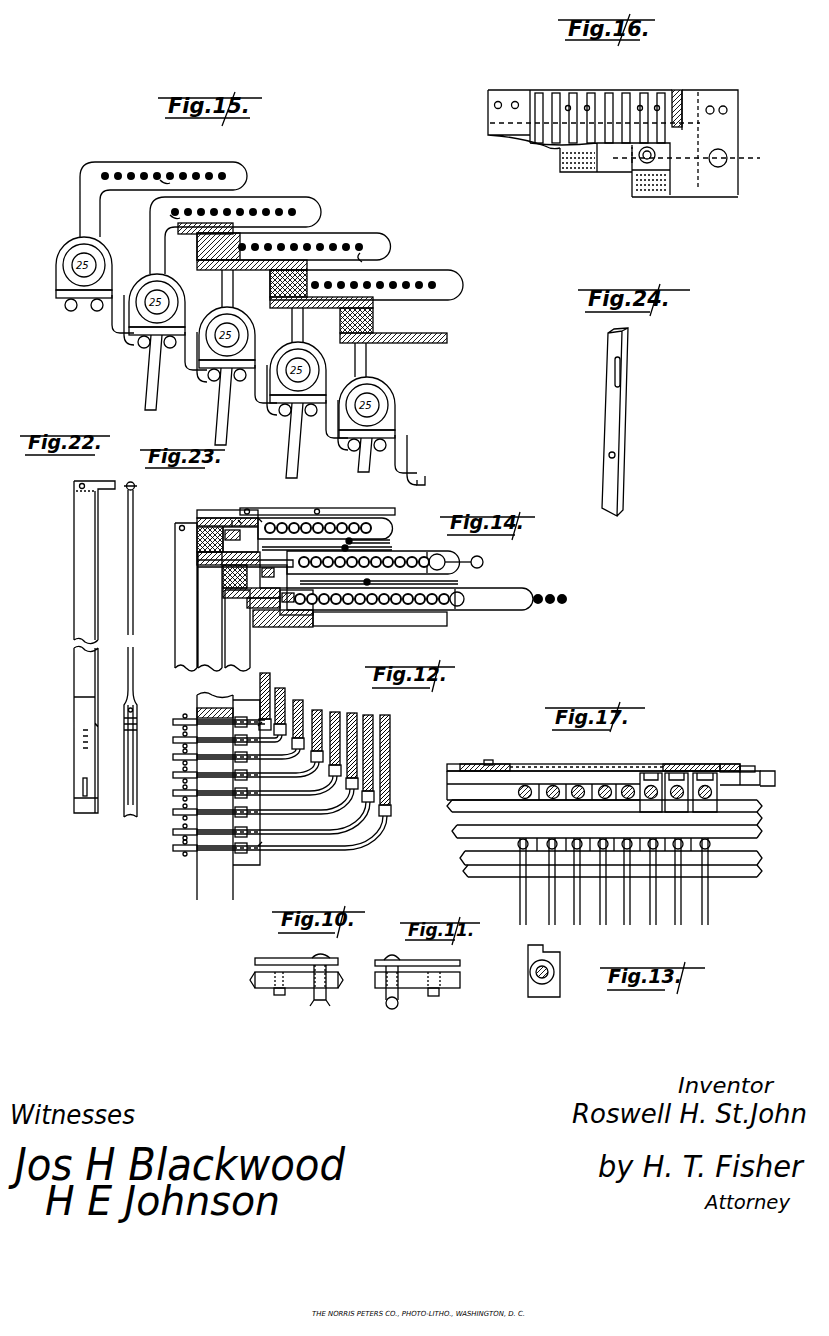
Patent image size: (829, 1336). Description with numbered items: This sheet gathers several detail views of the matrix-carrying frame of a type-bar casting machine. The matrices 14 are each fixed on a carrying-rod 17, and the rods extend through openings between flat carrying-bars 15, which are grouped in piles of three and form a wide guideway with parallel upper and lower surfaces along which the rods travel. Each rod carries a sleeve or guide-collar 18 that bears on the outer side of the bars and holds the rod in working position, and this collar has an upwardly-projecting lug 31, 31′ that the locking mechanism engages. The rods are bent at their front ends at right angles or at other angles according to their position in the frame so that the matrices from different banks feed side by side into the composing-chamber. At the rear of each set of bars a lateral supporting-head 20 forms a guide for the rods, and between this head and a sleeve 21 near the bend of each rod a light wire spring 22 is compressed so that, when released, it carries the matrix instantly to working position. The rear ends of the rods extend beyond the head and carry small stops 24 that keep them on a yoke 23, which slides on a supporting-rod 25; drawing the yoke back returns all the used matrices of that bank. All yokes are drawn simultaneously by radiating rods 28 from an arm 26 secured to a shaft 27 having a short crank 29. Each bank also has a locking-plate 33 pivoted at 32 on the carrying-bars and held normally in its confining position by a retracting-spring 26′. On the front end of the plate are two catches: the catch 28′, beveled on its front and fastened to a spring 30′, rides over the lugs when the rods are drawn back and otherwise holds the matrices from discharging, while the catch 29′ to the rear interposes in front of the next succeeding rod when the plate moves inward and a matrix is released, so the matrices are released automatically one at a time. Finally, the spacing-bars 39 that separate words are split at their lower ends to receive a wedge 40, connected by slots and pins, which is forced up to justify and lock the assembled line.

In FIG. 14, the matrices 14 is at (212, 597).
In FIG. 12, the matrices 14 is at (175, 725).
In FIG. 17, the matrices 14 is at (614, 881).
In FIG. 16, the carrying-bars 15 is at (570, 160).
In FIG. 14, the carrying-bars 15 is at (210, 525).
In FIG. 17, the carrying-bars 15 is at (765, 780).
In FIG. 15, the carrying-rod 17 is at (160, 172).
In FIG. 16, the carrying-rod 17 is at (560, 100).
In FIG. 22, the carrying-rod 17 is at (95, 483).
In FIG. 23, the carrying-rod 17 is at (136, 486).
In FIG. 14, the carrying-rod 17 is at (200, 547).
In FIG. 12, the carrying-rod 17 is at (385, 718).
In FIG. 17, the carrying-rod 17 is at (524, 790).
In FIG. 13, the carrying-rod 17 is at (547, 978).
In FIG. 14, the sleeve 18 is at (200, 545).
In FIG. 12, the sleeve 18 is at (270, 725).
In FIG. 17, the sleeve 18 is at (626, 819).
In FIG. 13, the sleeve 18 is at (560, 965).
In FIG. 15, the matrix-rod-supporting head 20 is at (345, 235).
In FIG. 16, the matrix-rod-supporting head 20 is at (682, 92).
In FIG. 14, the matrix-rod-supporting head 20 is at (392, 527).
In FIG. 14, the sleeve 21 is at (350, 541).
In FIG. 12, the sleeve 21 is at (325, 767).
In FIG. 12, the wire spring 22 is at (340, 720).
In FIG. 15, the yoke 23 is at (205, 162).
In FIG. 15, the stops 24 is at (362, 253).
In FIG. 14, the stops 24 is at (240, 522).
In FIG. 15, the supporting-rod 25 is at (240, 361).
In FIG. 14, the arm 26 is at (290, 510).
In FIG. 17, the retracting-spring 26′ is at (745, 767).
In FIG. 10, the retracting-spring 26′ is at (272, 960).
In FIG. 11, the retracting-spring 26′ is at (410, 960).
In FIG. 14, the shaft 27 is at (300, 548).
In FIG. 15, the radiating rods 28 is at (158, 410).
In FIG. 14, the radiating rods 28 is at (232, 527).
In FIG. 17, the catch 28′ is at (718, 772).
In FIG. 10, the catch 28′ is at (322, 956).
In FIG. 11, the catch 28′ is at (392, 1009).
In FIG. 14, the crank 29 is at (300, 515).
In FIG. 10, the catch 29′ is at (282, 996).
In FIG. 11, the catch 29′ is at (434, 996).
In FIG. 17, the spring 30′ is at (495, 766).
In FIG. 14, the lug 31 is at (262, 520).
In FIG. 12, the lug 31 is at (228, 795).
In FIG. 12, the lug 31′ is at (248, 802).
In FIG. 17, the lug 31′ is at (683, 772).
In FIG. 13, the lug 31′ is at (530, 950).
In FIG. 14, the pivot 32 is at (245, 567).
In FIG. 14, the locking-plate 33 is at (197, 520).
In FIG. 17, the locking-plate 33 is at (452, 766).
In FIG. 10, the locking-plate 33 is at (272, 990).
In FIG. 11, the locking-plate 33 is at (460, 984).
In FIG. 22, the spacing-bar 39 is at (125, 572).
In FIG. 24, the wedge 40 is at (630, 348).
In FIG. 22, the wedge 40 is at (97, 812).